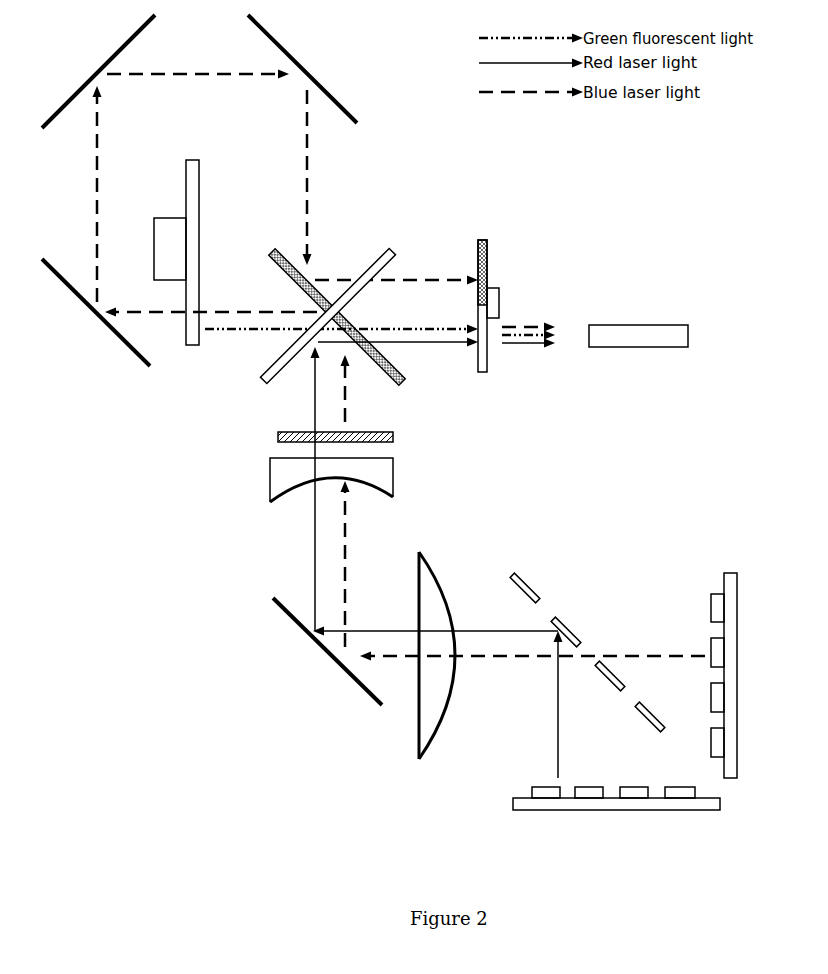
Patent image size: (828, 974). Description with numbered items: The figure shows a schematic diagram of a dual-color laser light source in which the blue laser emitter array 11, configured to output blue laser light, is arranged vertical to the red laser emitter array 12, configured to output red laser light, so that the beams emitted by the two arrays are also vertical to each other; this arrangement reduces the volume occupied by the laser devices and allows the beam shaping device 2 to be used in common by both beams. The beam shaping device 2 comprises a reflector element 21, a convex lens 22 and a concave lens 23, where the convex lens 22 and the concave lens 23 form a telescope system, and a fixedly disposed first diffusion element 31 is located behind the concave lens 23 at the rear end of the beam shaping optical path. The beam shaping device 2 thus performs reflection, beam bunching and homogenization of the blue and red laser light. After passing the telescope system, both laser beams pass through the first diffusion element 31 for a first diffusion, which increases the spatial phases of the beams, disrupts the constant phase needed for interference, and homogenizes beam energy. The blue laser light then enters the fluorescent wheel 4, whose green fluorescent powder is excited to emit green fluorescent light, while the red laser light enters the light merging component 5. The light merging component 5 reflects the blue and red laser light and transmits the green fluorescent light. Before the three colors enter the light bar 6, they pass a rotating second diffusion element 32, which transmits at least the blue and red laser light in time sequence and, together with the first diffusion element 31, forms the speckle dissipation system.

The beam shaping device 2 is at (268, 530).
The fluorescent wheel 4 is at (195, 348).
The light merging component 5 is at (347, 263).
The light bar 6 is at (642, 310).
The blue laser emitter array 11 is at (724, 560).
The red laser emitter array 12 is at (508, 812).
The reflector element 21 is at (543, 585).
The convex lens 22 is at (433, 562).
The concave lens 23 is at (403, 483).
The first diffusion element 31 is at (387, 427).
The second diffusion element 32 is at (482, 233).